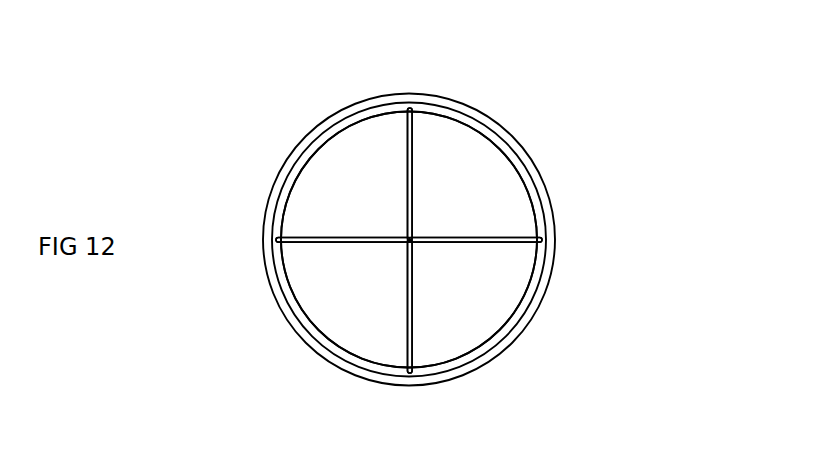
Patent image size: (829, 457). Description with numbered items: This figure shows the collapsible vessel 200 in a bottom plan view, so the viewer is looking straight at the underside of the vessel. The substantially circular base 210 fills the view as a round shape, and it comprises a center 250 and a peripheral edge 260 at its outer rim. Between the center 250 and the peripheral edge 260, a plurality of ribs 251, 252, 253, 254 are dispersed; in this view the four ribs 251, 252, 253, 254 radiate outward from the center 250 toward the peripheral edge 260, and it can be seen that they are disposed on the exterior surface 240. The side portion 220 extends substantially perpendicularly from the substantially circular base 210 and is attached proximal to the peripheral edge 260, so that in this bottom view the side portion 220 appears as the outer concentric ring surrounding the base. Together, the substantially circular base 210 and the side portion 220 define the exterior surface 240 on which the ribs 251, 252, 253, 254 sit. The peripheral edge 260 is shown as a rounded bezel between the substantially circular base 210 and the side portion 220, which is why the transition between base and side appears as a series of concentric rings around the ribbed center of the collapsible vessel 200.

The collapsible vessel 200 is at (213, 124).
The substantially circular base 210 is at (323, 302).
The side portion 220 is at (354, 110).
The exterior surface 240 is at (363, 330).
The center 250 is at (410, 240).
The rib 251 is at (297, 243).
The rib 252 is at (412, 164).
The rib 253 is at (503, 243).
The rib 254 is at (412, 336).
The peripheral edge 260 is at (537, 198).